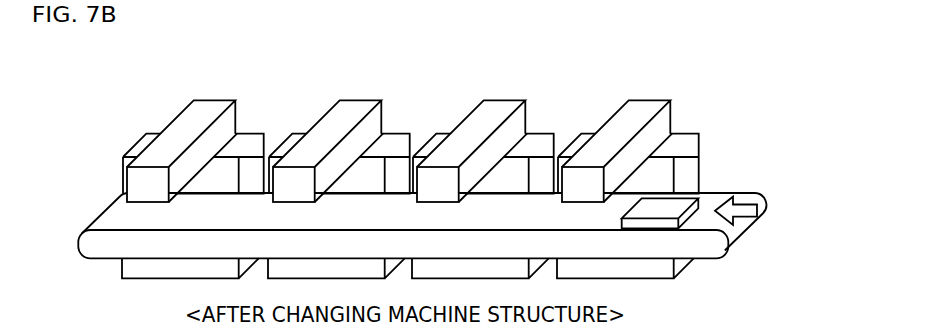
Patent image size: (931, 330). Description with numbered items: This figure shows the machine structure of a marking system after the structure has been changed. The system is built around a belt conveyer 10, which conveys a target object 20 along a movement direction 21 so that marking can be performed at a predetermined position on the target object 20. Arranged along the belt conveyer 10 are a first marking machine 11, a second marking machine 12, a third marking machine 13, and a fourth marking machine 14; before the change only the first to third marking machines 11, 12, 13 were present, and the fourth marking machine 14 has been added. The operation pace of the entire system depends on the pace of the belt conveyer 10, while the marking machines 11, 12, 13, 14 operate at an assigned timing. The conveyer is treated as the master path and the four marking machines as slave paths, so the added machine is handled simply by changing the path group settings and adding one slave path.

The belt conveyer 10 is at (108, 208).
The first marking machine 11 is at (641, 108).
The second marking machine 12 is at (498, 108).
The third marking machine 13 is at (351, 108).
The fourth marking machine 14 is at (198, 108).
The target object 20 is at (690, 206).
The movement direction 21 is at (762, 210).